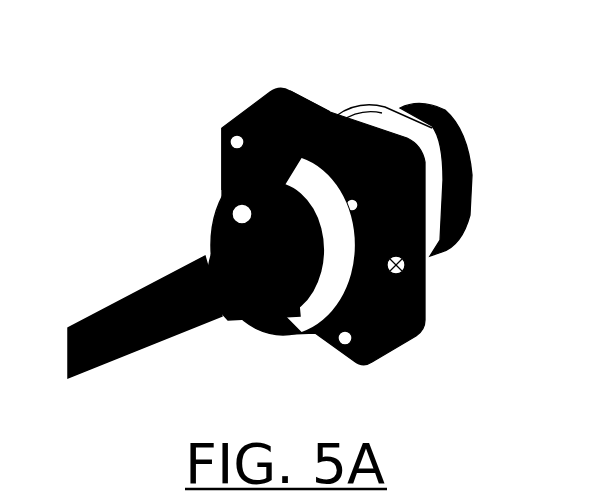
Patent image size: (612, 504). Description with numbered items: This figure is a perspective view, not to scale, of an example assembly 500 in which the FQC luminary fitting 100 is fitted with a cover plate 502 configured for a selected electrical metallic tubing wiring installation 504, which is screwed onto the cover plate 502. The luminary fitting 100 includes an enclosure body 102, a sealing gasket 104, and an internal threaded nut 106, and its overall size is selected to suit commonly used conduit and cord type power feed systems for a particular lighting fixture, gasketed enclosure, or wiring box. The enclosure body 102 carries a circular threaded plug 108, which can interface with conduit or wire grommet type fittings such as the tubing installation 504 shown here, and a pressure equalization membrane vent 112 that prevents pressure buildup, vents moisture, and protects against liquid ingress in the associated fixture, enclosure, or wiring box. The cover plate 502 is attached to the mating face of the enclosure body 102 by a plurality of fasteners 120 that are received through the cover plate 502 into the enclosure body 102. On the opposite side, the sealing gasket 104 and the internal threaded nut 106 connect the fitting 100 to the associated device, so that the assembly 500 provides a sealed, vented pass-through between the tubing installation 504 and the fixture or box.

The FQC luminary fitting 100 is at (452, 338).
The enclosure body 102 is at (245, 96).
The sealing gasket 104 is at (377, 133).
The internal threaded nut 106 is at (453, 132).
The circular threaded plug 108 is at (270, 186).
The pressure equalization membrane vent 112 is at (437, 268).
The fasteners 120 is at (337, 347).
The assembly 500 is at (333, 44).
The cover plate 502 is at (209, 156).
The electrical metallic tubing (EMT) wiring installation 504 is at (201, 236).